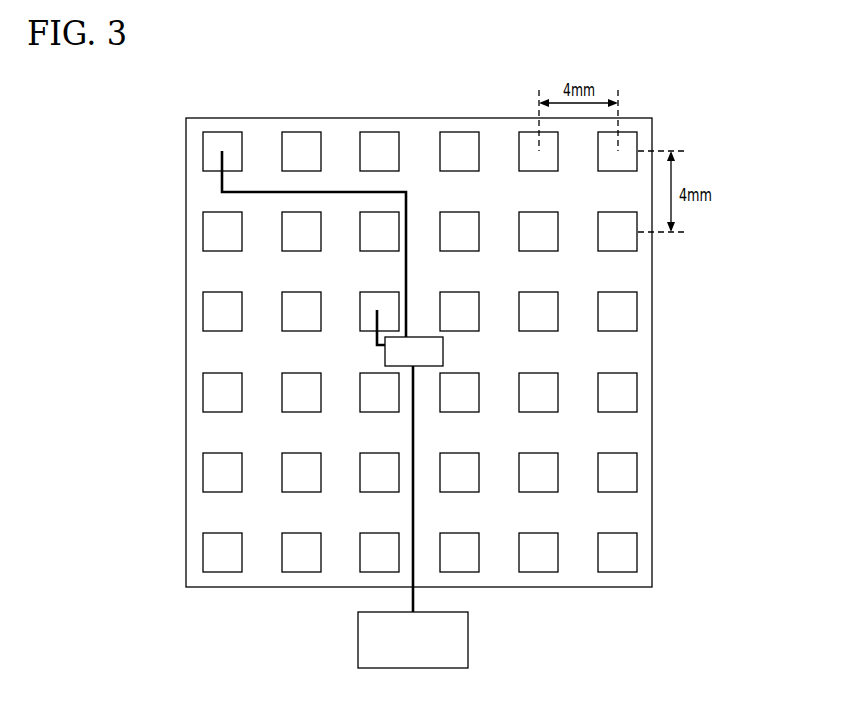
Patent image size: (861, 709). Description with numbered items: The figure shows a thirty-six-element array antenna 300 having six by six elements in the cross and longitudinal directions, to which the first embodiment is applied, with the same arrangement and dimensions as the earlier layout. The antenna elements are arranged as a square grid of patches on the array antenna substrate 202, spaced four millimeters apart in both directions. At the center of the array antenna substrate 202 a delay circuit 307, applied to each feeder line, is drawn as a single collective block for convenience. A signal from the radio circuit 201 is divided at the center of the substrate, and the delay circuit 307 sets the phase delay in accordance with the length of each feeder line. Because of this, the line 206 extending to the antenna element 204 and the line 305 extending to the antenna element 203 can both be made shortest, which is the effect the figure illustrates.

The radio circuit 201 is at (467, 635).
The array antenna substrate 202 is at (642, 577).
The antenna element 203 is at (359, 303).
The antenna element 204 is at (203, 148).
The line 206 is at (217, 180).
The array antenna 300 is at (237, 587).
The line 305 is at (373, 336).
The delay circuit 307 is at (428, 352).